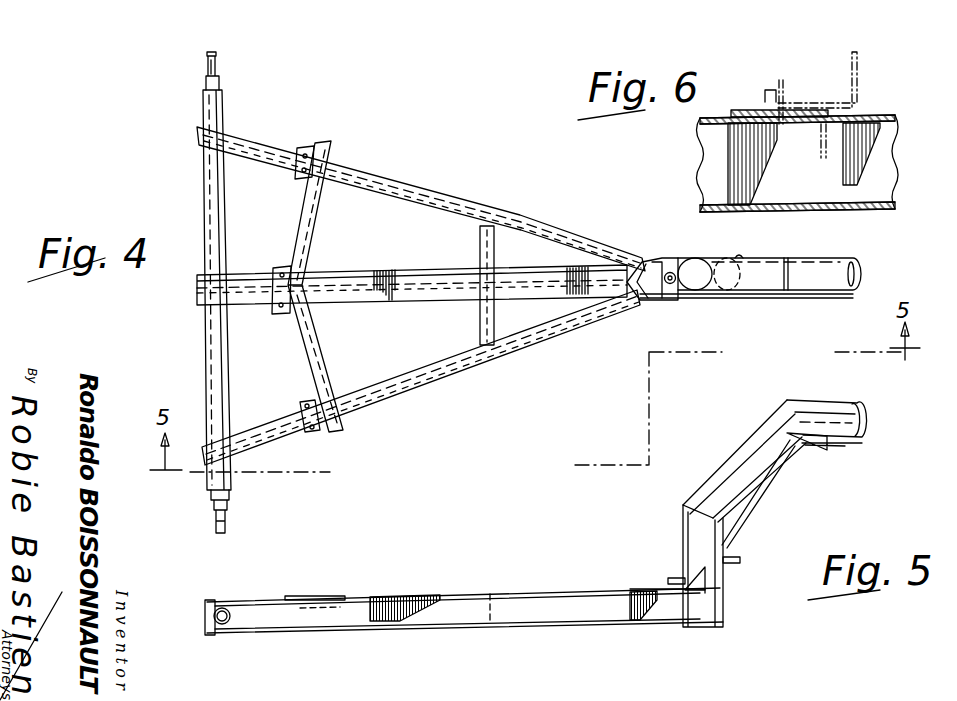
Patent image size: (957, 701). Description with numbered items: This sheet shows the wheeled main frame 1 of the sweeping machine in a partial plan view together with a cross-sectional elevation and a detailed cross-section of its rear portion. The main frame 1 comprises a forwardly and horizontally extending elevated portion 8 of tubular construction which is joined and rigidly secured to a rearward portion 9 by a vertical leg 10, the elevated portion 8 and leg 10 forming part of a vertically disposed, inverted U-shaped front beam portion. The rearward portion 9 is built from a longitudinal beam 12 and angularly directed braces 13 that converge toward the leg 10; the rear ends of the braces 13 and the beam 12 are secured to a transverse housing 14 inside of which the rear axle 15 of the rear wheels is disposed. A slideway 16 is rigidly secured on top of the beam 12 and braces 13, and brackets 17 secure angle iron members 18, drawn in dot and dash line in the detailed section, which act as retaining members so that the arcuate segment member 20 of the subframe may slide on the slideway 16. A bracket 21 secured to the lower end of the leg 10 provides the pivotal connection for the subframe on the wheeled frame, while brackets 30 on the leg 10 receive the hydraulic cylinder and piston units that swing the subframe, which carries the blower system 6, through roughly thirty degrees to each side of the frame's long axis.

In FIG. 4, the main frame 1 is at (541, 342).
In FIG. 6, the main frame 1 is at (885, 207).
In FIG. 5, the main frame 1 is at (581, 593).
In FIG. 4, the blower system 6 is at (287, 428).
In FIG. 4, the elevated portion 8 is at (825, 298).
In FIG. 5, the elevated portion 8 is at (840, 440).
In FIG. 4, the rearward portion 9 is at (487, 385).
In FIG. 5, the rearward portion 9 is at (530, 595).
In FIG. 4, the vertical leg 10 is at (705, 300).
In FIG. 5, the vertical leg 10 is at (690, 536).
In FIG. 4, the longitudinal beam 12 is at (347, 275).
In FIG. 4, the braces 13 is at (450, 208).
In FIG. 6, the braces 13 is at (884, 167).
In FIG. 5, the braces 13 is at (393, 614).
In FIG. 4, the transverse housing 14 is at (218, 214).
In FIG. 5, the transverse housing 14 is at (232, 610).
In FIG. 4, the rear axle 15 is at (222, 80).
In FIG. 4, the slideway 16 is at (314, 232).
In FIG. 4, the brackets 17 is at (305, 172).
In FIG. 5, the brackets 17 is at (306, 596).
In FIG. 6, the angle iron members 18 is at (775, 105).
In FIG. 6, the arcuate segment member 20 is at (864, 94).
In FIG. 4, the bracket 21 is at (668, 300).
In FIG. 5, the bracket 21 is at (668, 580).
In FIG. 4, the brackets 30 is at (740, 300).
In FIG. 5, the brackets 30 is at (742, 560).